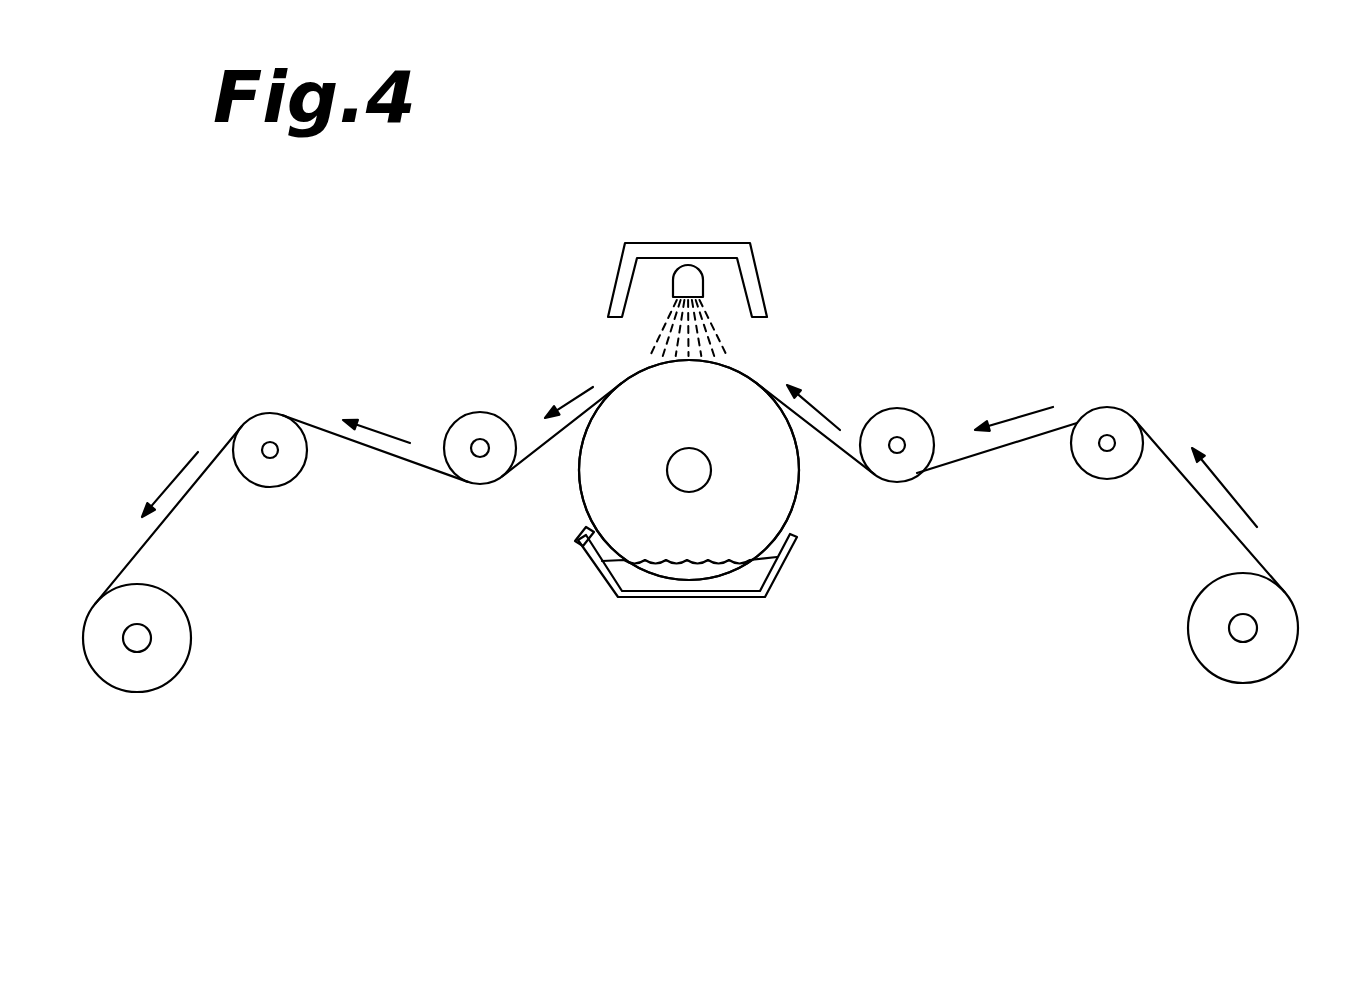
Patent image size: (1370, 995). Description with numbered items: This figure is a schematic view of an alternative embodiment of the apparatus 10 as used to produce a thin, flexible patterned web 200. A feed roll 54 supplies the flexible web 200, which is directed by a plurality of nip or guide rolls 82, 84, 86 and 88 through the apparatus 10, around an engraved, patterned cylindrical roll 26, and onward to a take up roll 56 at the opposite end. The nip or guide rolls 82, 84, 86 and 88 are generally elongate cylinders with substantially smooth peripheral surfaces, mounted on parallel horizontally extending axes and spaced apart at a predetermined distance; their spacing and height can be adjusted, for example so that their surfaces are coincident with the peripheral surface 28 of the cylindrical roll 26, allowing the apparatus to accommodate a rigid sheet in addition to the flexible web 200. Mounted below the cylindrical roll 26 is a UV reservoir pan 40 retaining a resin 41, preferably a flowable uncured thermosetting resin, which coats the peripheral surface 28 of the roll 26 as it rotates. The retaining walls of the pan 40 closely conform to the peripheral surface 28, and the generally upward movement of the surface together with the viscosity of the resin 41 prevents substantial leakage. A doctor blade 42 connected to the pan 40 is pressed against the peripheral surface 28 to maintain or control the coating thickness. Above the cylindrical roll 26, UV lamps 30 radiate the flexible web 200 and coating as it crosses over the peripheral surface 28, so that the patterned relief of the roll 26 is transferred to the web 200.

The apparatus 10 is at (987, 317).
The cylindrical roll 26 is at (603, 470).
The peripheral surface 28 is at (797, 490).
The UV lamps 30 is at (617, 287).
The UV reservoir pan 40 is at (672, 595).
The resin 41 is at (743, 580).
The doctor blade 42 is at (578, 543).
The feed roll 54 is at (1188, 630).
The take up roll 56 is at (185, 660).
The nip or guide roll 82 is at (1097, 480).
The nip or guide roll 84 is at (902, 483).
The nip or guide roll 86 is at (468, 483).
The nip or guide roll 88 is at (272, 485).
The flexible web 200 is at (1252, 548).